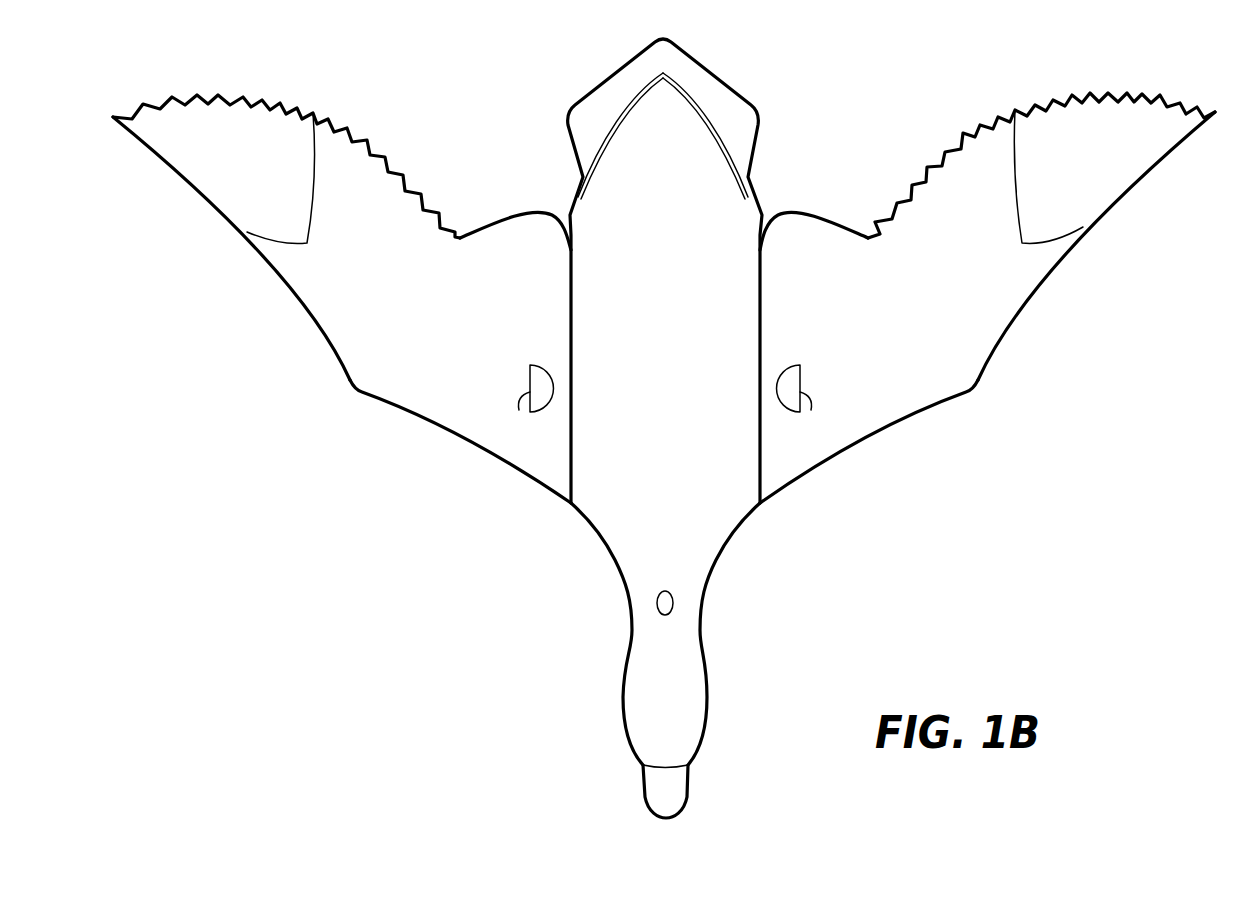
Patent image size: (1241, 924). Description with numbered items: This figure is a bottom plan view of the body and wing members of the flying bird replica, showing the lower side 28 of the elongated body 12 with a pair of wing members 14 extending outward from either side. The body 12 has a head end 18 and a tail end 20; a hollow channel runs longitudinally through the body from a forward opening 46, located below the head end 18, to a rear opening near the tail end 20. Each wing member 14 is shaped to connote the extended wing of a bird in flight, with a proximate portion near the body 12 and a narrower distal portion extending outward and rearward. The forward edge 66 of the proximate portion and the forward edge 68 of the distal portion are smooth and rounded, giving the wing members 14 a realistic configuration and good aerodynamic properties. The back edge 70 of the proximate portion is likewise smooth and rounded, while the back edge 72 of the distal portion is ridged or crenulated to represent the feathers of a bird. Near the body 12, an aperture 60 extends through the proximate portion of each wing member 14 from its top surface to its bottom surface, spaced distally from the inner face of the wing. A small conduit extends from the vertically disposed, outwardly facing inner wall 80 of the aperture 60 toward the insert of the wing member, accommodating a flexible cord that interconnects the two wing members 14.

The tail end 20 is at (780, 47).
The body 12 is at (677, 314).
The wing members 14 is at (442, 314).
The head end 18 is at (711, 782).
The lower side 28 is at (548, 544).
The forward opening 46 is at (665, 615).
The aperture 60 is at (507, 387).
The forward edge of the proximate portion 66 is at (378, 400).
The forward edge of the distal portion 68 is at (268, 260).
The back edge of the proximate portion 70 is at (505, 218).
The back edge of the distal portion 72 is at (350, 128).
The inner wall of the aperture 80 is at (518, 403).